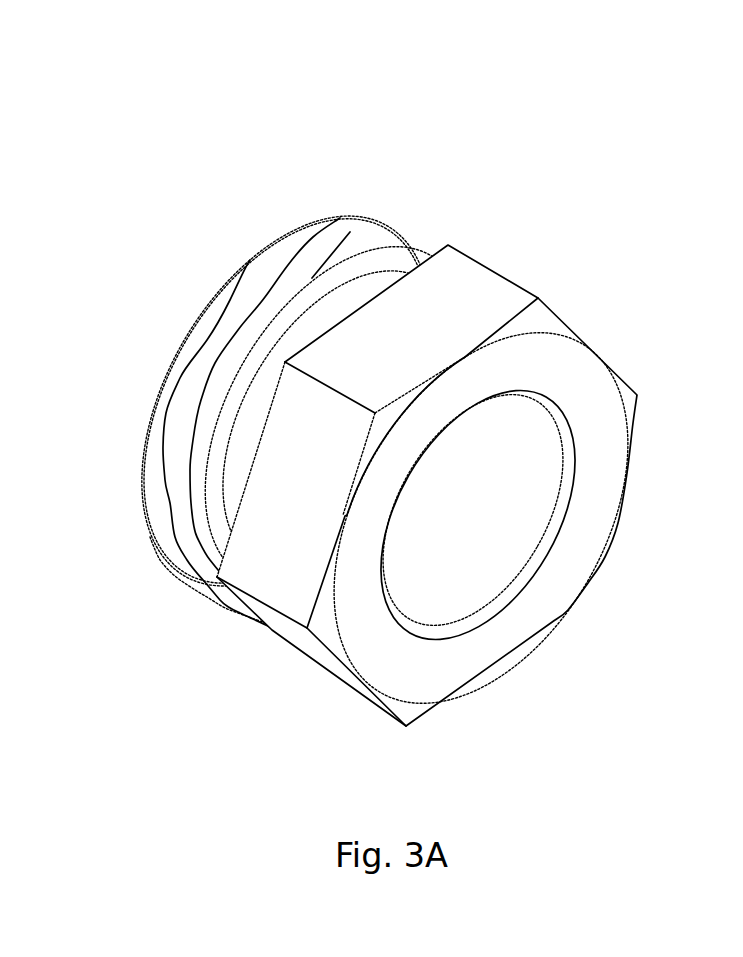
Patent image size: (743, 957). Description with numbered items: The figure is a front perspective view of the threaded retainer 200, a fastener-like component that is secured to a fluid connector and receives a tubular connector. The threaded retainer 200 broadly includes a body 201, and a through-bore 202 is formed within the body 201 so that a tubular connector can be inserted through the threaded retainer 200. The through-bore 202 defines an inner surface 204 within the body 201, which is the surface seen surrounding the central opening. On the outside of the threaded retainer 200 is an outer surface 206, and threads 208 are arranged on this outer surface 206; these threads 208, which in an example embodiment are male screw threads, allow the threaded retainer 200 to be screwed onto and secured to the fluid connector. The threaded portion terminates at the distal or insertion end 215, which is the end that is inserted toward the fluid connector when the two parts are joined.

The threaded retainer 200 is at (391, 428).
The body 201 is at (437, 292).
The through-bore 202 is at (463, 615).
The inner surface 204 is at (540, 470).
The outer surface 206 is at (181, 440).
The threads 208 is at (349, 233).
The distal or insertion end 215 is at (243, 263).